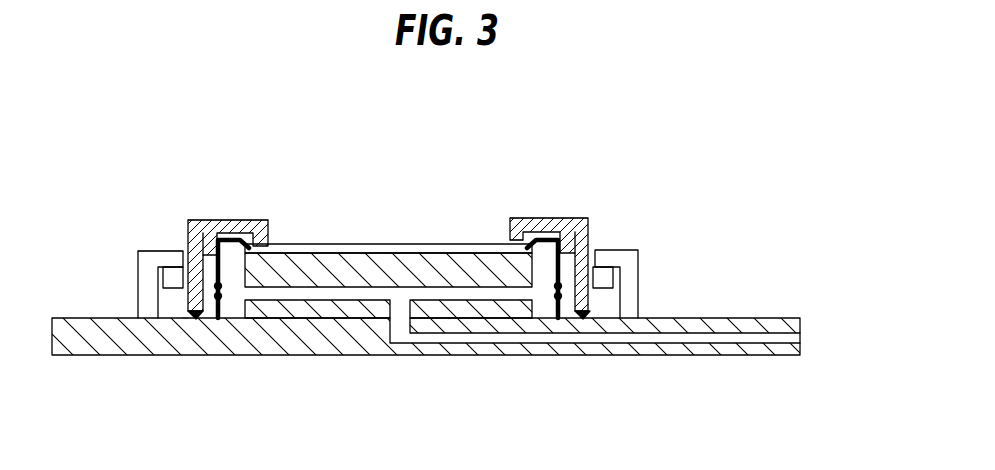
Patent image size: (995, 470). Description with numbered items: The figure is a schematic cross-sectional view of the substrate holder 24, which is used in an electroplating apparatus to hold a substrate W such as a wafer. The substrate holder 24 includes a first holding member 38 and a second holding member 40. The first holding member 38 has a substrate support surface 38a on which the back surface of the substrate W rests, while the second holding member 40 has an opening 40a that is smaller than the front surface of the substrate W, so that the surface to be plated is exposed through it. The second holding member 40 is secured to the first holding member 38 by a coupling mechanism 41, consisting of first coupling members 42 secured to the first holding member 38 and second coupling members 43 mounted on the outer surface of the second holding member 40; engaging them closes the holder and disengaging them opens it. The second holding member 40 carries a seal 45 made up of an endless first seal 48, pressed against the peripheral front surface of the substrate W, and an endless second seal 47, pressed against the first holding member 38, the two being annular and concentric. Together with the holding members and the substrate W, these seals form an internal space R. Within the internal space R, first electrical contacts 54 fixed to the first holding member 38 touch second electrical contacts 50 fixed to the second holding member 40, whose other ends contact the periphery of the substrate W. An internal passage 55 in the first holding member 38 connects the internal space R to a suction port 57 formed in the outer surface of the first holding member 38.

The substrate holder 24 is at (357, 356).
The first holding member 38 is at (741, 318).
The substrate support surface 38a is at (437, 244).
The second holding member 40 is at (590, 233).
The opening 40a is at (518, 245).
The coupling mechanism 41 is at (145, 248).
The first coupling members 42 is at (138, 256).
The second coupling members 43 is at (191, 319).
The seal 45 is at (186, 319).
The second seal 47 is at (198, 320).
The first seal 48 is at (257, 246).
The second electrical contacts 50 is at (238, 233).
The first electrical contacts 54 is at (220, 318).
The internal passage 55 is at (496, 340).
The suction port 57 is at (801, 335).
The substrate W is at (402, 243).
The internal space R is at (231, 264).